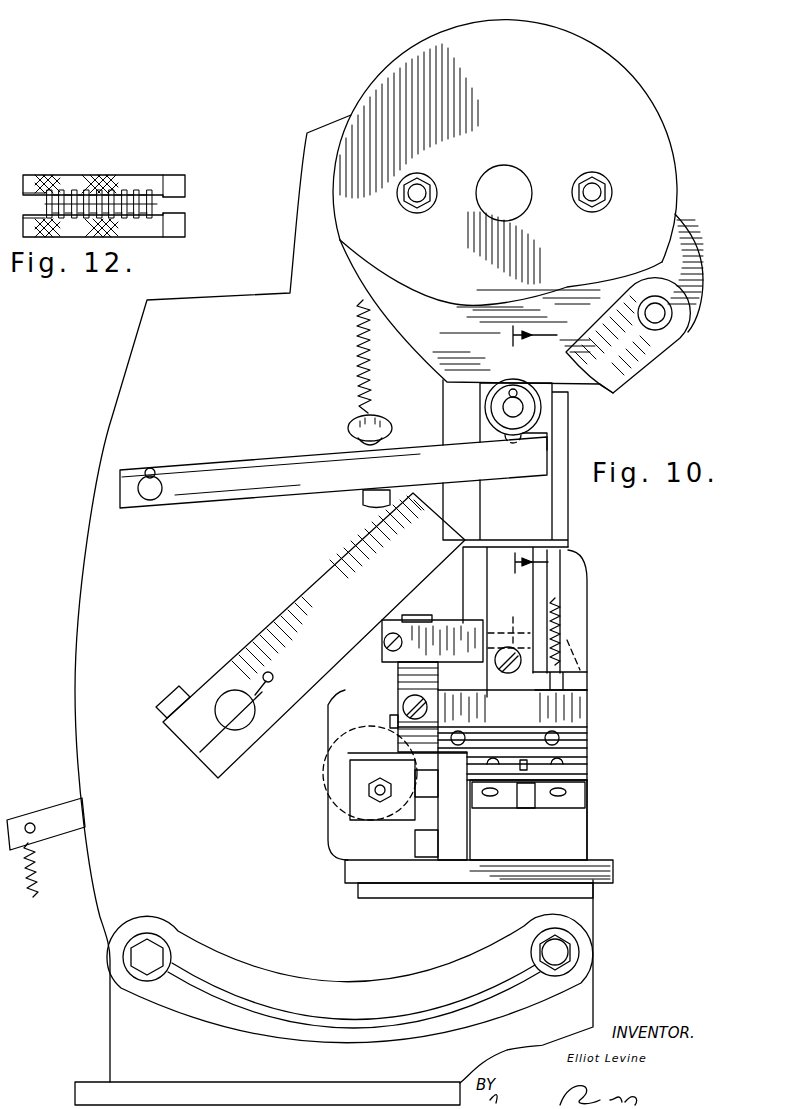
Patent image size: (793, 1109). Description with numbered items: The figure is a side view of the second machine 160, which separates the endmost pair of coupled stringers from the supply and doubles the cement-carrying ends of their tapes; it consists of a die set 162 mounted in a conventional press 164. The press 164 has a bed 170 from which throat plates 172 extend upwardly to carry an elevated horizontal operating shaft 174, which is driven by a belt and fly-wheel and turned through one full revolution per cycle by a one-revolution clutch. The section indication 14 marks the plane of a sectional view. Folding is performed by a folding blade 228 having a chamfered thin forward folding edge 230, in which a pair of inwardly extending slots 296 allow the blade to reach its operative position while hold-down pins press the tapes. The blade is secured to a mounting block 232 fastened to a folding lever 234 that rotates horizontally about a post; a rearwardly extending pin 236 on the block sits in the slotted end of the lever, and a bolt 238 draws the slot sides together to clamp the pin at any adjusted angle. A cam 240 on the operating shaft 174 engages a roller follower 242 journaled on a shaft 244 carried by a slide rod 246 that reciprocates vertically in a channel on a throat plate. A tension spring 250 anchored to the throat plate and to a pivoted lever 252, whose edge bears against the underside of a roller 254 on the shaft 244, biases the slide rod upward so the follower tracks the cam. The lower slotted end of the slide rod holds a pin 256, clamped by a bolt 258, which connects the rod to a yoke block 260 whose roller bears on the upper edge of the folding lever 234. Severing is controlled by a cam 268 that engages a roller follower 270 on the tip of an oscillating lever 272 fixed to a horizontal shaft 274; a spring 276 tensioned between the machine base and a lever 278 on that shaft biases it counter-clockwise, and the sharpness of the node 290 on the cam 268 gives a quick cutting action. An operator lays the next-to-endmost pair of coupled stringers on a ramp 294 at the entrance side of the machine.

The second machine 160 is at (53, 620).
The die set 162 is at (427, 613).
The press 164 is at (72, 722).
The bed 170 is at (615, 867).
The throat plates 172 is at (95, 552).
The operating shaft 174 is at (524, 182).
The section line 14- 14 is at (523, 449).
The folding blade 228 is at (587, 743).
The forward folding edge 230 is at (480, 780).
The mounting block 232 is at (577, 720).
The folding lever 234 is at (400, 680).
The pin 236 is at (393, 720).
The bolt 238 is at (428, 712).
The cam 240 is at (430, 358).
The roller follower 242 is at (490, 405).
The shaft 244 is at (523, 405).
The slide rod 246 is at (527, 590).
The tension spring 250 is at (357, 367).
The pivoted lever 252 is at (293, 458).
The roller 254 is at (543, 423).
The pin 256 is at (509, 637).
The bolt 258 is at (512, 674).
The yoke block 260 is at (452, 633).
The cam 268 is at (667, 152).
The roller follower 270 is at (688, 320).
The oscillating lever 272 is at (253, 640).
The horizontal shaft 274 is at (227, 697).
The spring 276 is at (40, 893).
The lever 278 is at (62, 813).
The node 290 is at (660, 267).
The ramp 294 is at (582, 823).
The slots 296 is at (587, 767).